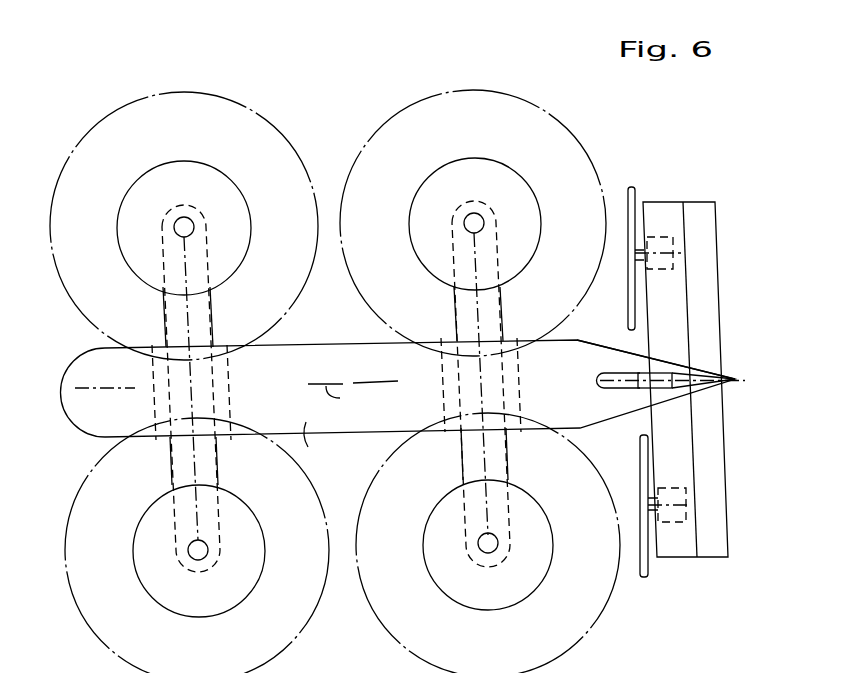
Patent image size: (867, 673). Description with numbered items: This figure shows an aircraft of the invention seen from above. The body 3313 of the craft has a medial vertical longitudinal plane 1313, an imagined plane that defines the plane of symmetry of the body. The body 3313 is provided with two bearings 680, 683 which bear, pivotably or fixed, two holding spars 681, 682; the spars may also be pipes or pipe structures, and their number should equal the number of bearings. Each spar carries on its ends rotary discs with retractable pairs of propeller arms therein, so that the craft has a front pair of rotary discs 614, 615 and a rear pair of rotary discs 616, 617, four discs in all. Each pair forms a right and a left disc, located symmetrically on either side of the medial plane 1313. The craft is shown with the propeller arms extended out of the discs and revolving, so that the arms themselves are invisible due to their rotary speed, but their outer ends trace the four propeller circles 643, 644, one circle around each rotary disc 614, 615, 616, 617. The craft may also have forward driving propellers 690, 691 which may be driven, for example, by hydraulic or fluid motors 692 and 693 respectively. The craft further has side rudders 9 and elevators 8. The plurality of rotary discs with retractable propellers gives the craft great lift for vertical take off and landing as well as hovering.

The propeller circle 643 is at (165, 126).
The propeller circle 644 is at (103, 312).
The rotary disc 614 is at (233, 513).
The rotary disc 615 is at (223, 200).
The rotary disc 616 is at (538, 516).
The rotary disc 617 is at (522, 200).
The bearing 680 is at (222, 385).
The holding spar 681 is at (208, 324).
The holding spar 682 is at (490, 322).
The bearing 683 is at (513, 384).
The medial vertical longitudinal plane 1313 is at (353, 398).
The body 3313 is at (337, 443).
The elevator 8 is at (697, 214).
The side rudder 9 is at (700, 380).
The forward driving propeller 690 is at (640, 478).
The forward driving propeller 691 is at (632, 273).
The hydraulic motor 692 is at (665, 246).
The hydraulic motor 693 is at (667, 518).